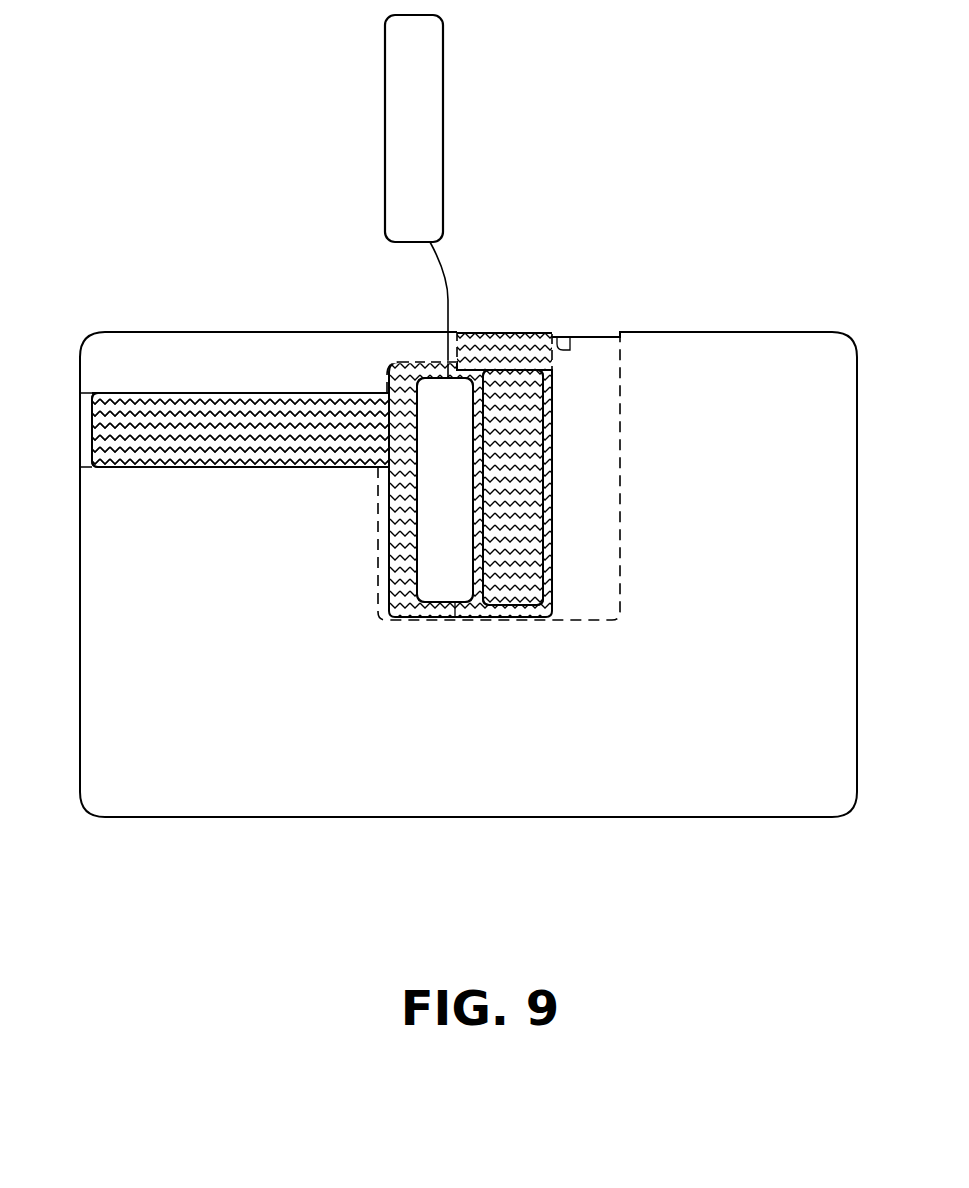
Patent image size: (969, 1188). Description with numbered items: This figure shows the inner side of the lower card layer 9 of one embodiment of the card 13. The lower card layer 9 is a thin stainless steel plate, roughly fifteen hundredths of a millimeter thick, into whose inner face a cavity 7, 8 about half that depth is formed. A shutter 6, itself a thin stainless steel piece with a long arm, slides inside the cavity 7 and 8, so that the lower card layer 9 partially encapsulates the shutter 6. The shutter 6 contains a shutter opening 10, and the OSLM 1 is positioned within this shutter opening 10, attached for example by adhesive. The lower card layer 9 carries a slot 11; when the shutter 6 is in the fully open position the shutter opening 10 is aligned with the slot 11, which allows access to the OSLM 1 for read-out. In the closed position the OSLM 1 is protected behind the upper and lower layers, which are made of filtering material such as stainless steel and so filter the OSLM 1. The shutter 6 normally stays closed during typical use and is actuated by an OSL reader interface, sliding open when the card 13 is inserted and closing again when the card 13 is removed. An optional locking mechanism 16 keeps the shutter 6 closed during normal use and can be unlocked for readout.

The OSLM 1 is at (443, 108).
The shutter 6 is at (304, 440).
The cavity 7 is at (87, 392).
The cavity 8 is at (620, 372).
The lower card layer 9 is at (793, 780).
The shutter opening 10 is at (435, 570).
The slot 11 is at (545, 620).
The card 13 is at (118, 833).
The locking mechanism 16 is at (512, 333).